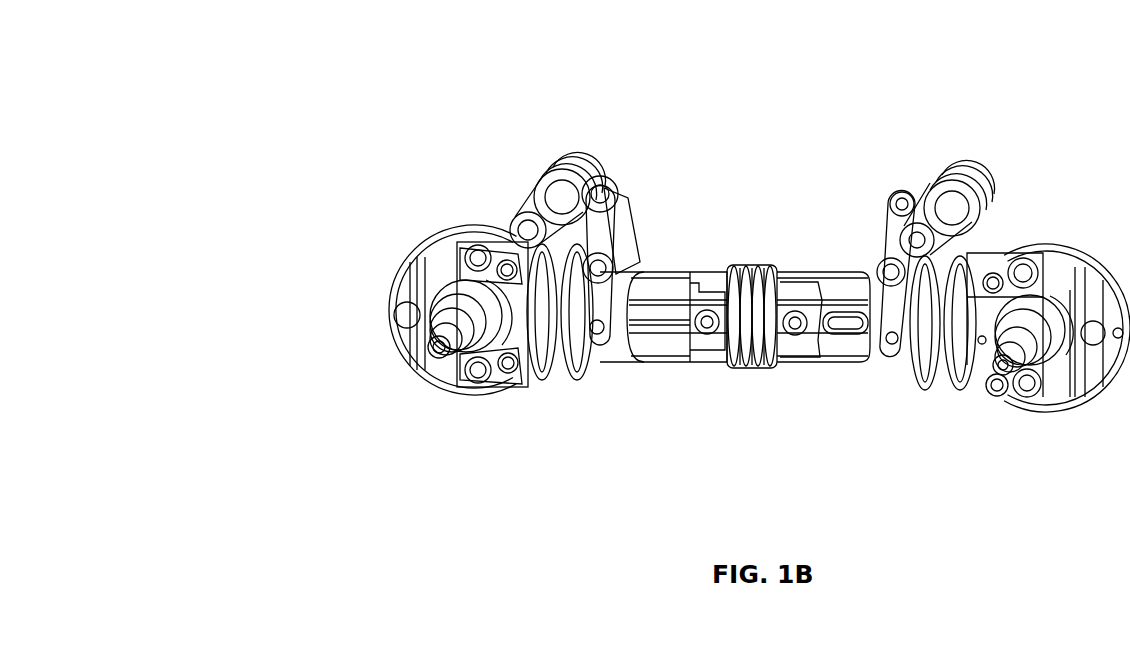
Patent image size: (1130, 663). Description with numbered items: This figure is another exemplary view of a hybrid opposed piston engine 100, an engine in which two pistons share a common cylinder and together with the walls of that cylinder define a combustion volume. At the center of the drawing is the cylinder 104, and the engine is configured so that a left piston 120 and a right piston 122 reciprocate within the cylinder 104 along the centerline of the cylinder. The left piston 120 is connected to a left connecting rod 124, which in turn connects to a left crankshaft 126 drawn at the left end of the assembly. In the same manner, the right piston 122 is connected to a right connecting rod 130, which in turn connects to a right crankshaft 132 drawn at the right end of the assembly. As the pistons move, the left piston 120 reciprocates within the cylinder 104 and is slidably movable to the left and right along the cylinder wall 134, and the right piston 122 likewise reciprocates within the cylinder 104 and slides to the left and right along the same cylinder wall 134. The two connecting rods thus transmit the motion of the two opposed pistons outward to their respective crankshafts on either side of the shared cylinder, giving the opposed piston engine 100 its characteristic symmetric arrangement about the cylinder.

The hybrid opposed piston engine 100 is at (248, 50).
The cylinder 104 is at (759, 356).
The left piston 120 is at (702, 278).
The right piston 122 is at (808, 282).
The left connecting rod 124 is at (642, 300).
The left crankshaft 126 is at (437, 250).
The right connecting rod 130 is at (821, 306).
The right crankshaft 132 is at (1060, 270).
The cylinder wall 134 is at (682, 365).